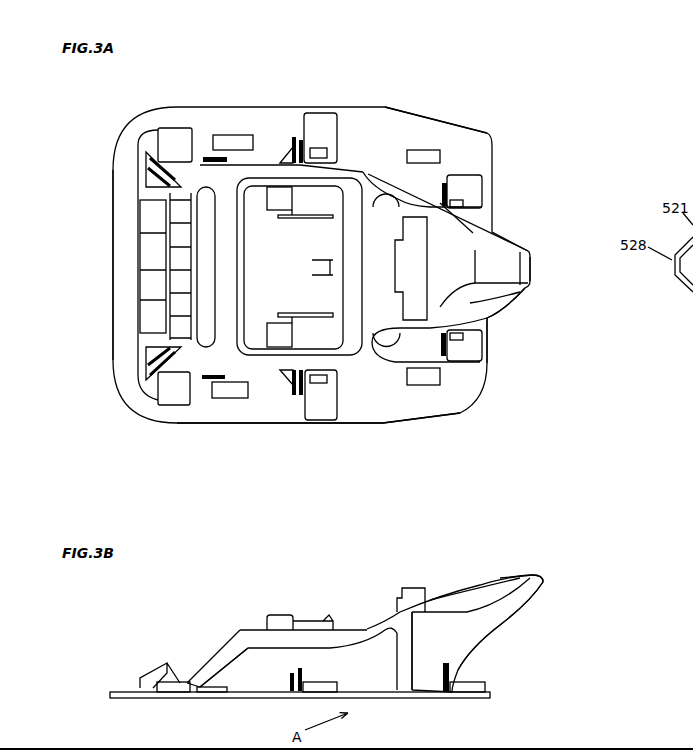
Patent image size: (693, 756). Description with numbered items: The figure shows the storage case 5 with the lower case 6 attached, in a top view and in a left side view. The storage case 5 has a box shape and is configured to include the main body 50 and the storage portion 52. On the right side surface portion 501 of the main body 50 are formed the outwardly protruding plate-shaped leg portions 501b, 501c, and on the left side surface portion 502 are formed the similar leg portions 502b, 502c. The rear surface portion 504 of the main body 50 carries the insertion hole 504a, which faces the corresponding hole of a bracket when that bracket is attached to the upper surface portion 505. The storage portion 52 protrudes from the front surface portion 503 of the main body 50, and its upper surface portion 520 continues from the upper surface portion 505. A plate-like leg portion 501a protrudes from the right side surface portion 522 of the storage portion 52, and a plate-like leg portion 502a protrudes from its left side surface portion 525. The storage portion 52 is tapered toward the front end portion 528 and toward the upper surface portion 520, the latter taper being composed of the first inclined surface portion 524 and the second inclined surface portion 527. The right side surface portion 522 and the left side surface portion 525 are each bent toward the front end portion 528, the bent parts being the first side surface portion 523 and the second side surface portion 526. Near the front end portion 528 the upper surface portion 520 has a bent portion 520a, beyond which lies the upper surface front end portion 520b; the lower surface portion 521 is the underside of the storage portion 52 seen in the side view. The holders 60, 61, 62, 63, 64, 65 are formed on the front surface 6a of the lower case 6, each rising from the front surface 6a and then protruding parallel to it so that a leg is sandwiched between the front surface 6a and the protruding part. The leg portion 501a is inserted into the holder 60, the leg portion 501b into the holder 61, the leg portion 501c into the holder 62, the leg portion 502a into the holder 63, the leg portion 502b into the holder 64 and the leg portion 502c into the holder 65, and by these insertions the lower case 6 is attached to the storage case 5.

In FIG. 3B, the storage case 5 is at (348, 581).
In FIG. 3A, the lower case 6 is at (113, 258).
In FIG. 3B, the lower case 6 is at (487, 697).
In FIG. 3A, the front surface 6a is at (120, 283).
In FIG. 3A, the main body 50 is at (135, 235).
In FIG. 3B, the main body 50 is at (341, 622).
In FIG. 3B, the storage portion 52 is at (430, 587).
In FIG. 3A, the holder 60 is at (461, 187).
In FIG. 3A, the holder 61 is at (324, 122).
In FIG. 3A, the holder 62 is at (172, 142).
In FIG. 3A, the holder 63 is at (468, 342).
In FIG. 3B, the holder 63 is at (477, 685).
In FIG. 3A, the holder 64 is at (318, 407).
In FIG. 3B, the holder 64 is at (320, 687).
In FIG. 3A, the holder 65 is at (170, 395).
In FIG. 3B, the holder 65 is at (178, 692).
In FIG. 3A, the right side surface portion 501 is at (328, 172).
In FIG. 3A, the leg portion 501a is at (444, 181).
In FIG. 3A, the leg portion 501b is at (289, 138).
In FIG. 3A, the leg portion 501c is at (147, 148).
In FIG. 3A, the left side surface portion 502 is at (370, 358).
In FIG. 3B, the left side surface portion 502 is at (360, 677).
In FIG. 3A, the leg portion 502a is at (446, 338).
In FIG. 3B, the leg portion 502a is at (447, 682).
In FIG. 3A, the leg portion 502b is at (297, 387).
In FIG. 3B, the leg portion 502b is at (288, 690).
In FIG. 3A, the leg portion 502c is at (148, 387).
In FIG. 3B, the leg portion 502c is at (155, 690).
In FIG. 3A, the front surface portion 503 is at (388, 340).
In FIG. 3B, the front surface portion 503 is at (397, 680).
In FIG. 3A, the rear surface portion 504 is at (225, 333).
In FIG. 3B, the rear surface portion 504 is at (200, 662).
In FIG. 3A, the insertion hole 504a is at (200, 165).
In FIG. 3A, the upper surface portion 505 is at (320, 350).
In FIG. 3B, the upper surface portion 505 is at (258, 630).
In FIG. 3A, the upper surface portion 520 is at (447, 280).
In FIG. 3B, the upper surface portion 520 is at (442, 590).
In FIG. 3A, the bent portion 520a is at (473, 252).
In FIG. 3B, the bent portion 520a is at (477, 588).
In FIG. 3A, the upper surface front end portion 520b is at (493, 270).
In FIG. 3B, the upper surface front end portion 520b is at (515, 575).
In FIG. 3B, the lower surface portion 521 is at (498, 625).
In FIG. 3A, the right side surface portion 522 is at (405, 172).
In FIG. 3A, the first side surface portion 523 is at (470, 232).
In FIG. 3A, the first inclined surface portion 524 is at (480, 231).
In FIG. 3A, the left side surface portion 525 is at (410, 330).
In FIG. 3B, the left side surface portion 525 is at (425, 667).
In FIG. 3A, the second side surface portion 526 is at (497, 315).
In FIG. 3B, the second side surface portion 526 is at (520, 607).
In FIG. 3A, the second inclined surface portion 527 is at (502, 292).
In FIG. 3B, the second inclined surface portion 527 is at (470, 588).
In FIG. 3A, the front end portion 528 is at (525, 268).
In FIG. 3B, the front end portion 528 is at (532, 580).